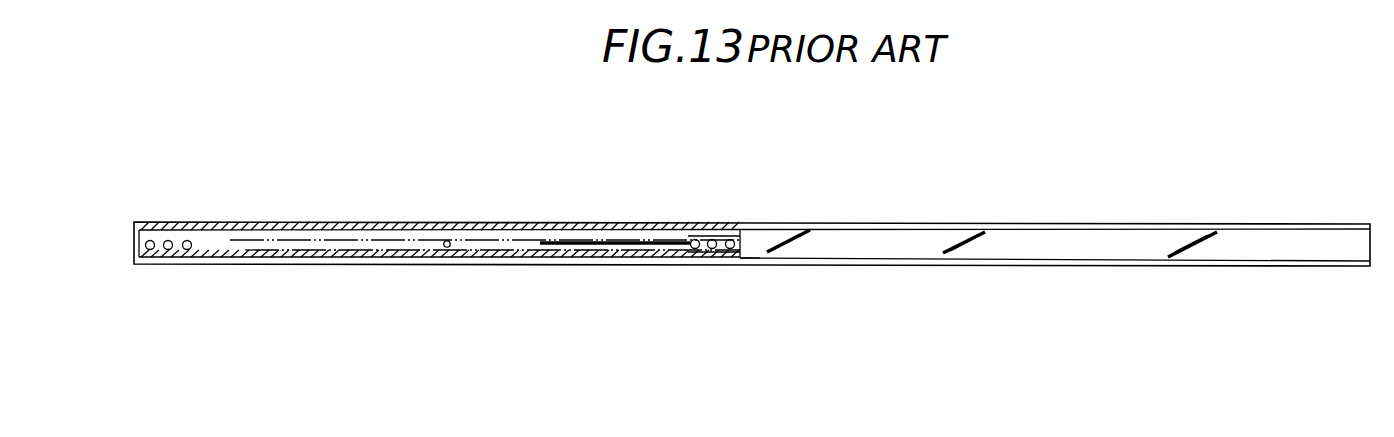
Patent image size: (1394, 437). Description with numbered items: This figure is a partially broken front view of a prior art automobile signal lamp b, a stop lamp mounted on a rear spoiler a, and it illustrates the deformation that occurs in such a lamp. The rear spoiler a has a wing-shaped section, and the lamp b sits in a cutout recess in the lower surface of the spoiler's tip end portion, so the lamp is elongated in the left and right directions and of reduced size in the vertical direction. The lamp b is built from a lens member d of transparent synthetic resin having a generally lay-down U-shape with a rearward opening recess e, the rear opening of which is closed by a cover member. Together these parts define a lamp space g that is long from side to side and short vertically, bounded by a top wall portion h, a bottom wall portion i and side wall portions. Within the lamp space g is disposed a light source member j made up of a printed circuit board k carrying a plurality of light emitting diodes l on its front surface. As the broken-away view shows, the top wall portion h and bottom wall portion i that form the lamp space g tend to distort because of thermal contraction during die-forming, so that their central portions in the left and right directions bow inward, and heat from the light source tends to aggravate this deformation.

The rear spoiler a is at (993, 167).
The automobile signal lamp b is at (890, 266).
The lens member d is at (820, 250).
The rearward opening recess e is at (448, 247).
The lamp space g is at (396, 240).
The top wall portion h is at (430, 230).
The bottom wall portion i is at (355, 265).
The light source member j is at (707, 152).
The printed circuit board k is at (645, 242).
The light emitting diodes l is at (694, 240).